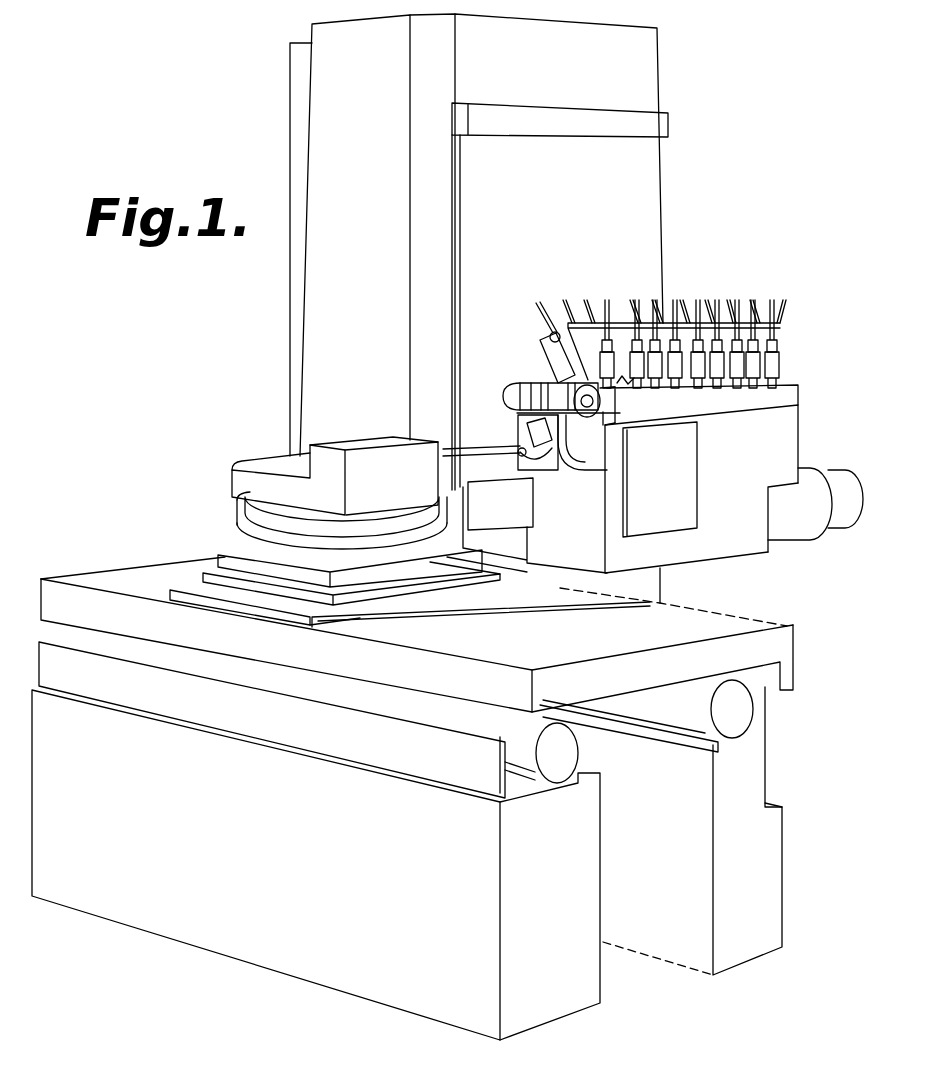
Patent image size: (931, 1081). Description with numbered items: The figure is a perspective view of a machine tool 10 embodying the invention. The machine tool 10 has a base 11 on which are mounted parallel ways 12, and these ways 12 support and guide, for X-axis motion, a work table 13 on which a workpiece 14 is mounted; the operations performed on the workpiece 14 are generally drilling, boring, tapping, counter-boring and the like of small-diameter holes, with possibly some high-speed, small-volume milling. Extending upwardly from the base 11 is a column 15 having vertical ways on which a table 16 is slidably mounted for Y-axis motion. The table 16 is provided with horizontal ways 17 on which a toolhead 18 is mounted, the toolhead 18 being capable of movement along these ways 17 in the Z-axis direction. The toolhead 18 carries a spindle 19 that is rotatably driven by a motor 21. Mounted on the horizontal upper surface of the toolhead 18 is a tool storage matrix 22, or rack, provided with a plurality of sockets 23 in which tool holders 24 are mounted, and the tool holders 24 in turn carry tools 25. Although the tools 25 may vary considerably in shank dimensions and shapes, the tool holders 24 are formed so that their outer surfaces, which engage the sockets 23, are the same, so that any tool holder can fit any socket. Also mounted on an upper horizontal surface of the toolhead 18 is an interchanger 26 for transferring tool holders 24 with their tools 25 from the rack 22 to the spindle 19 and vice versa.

The machine tool 10 is at (292, 121).
The base 11 is at (784, 849).
The parallel ways 12 is at (720, 721).
The work table 13 is at (205, 573).
The workpiece 14 is at (232, 482).
The column 15 is at (357, 264).
The table 16 is at (560, 215).
The horizontal ways 17 is at (507, 518).
The toolhead 18 is at (727, 550).
The spindle 19 is at (548, 470).
The motor 21 is at (792, 538).
The tool storage matrix 22 is at (793, 387).
The sockets 23 is at (767, 368).
The tool holders 24 is at (777, 348).
The tools 25 is at (787, 313).
The interchanger 26 is at (508, 388).